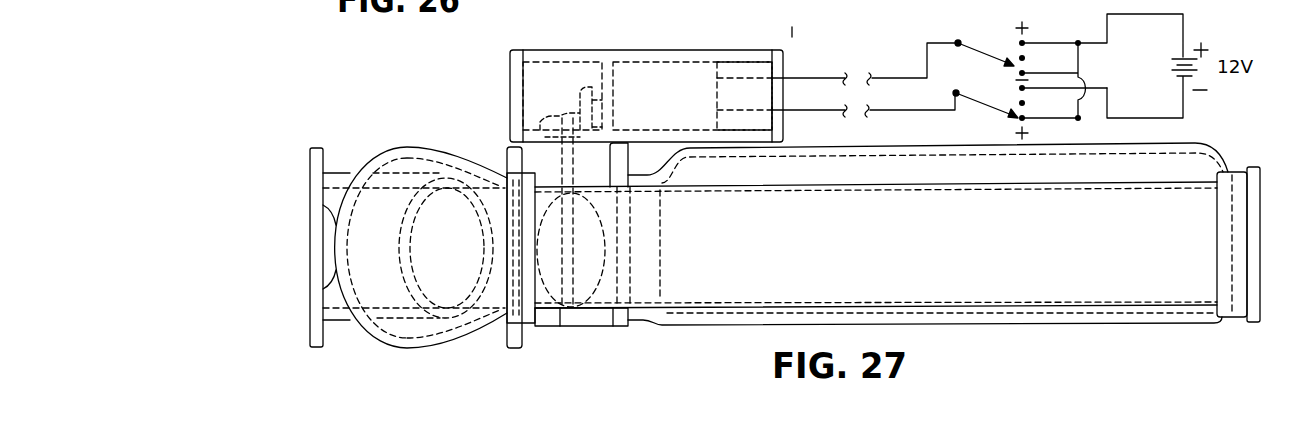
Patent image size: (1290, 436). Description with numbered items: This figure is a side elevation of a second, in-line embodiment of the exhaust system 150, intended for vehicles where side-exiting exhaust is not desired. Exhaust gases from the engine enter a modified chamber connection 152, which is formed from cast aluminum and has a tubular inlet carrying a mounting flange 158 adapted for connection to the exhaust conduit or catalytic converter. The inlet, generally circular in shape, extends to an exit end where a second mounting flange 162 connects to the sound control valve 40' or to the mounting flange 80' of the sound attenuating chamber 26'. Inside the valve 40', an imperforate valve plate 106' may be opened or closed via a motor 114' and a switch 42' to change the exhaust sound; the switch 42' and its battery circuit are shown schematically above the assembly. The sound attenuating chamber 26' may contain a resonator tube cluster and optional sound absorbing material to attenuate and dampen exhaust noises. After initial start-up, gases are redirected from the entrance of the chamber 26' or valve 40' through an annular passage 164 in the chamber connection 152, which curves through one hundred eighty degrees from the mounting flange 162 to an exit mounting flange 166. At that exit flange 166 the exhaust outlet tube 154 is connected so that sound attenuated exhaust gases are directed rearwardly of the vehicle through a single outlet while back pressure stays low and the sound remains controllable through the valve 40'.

The sound attenuating chamber 26' is at (944, 214).
The sound control valve 40' is at (646, 80).
The switch 42' is at (988, 69).
The mounting flange 80' is at (592, 255).
The imperforate valve plate 106' is at (598, 235).
The motor 114' is at (692, 74).
The exhaust system 150 is at (403, 96).
The chamber connection 152 is at (431, 147).
The exhaust outlet tube 154 is at (741, 304).
The mounting flange 158 is at (313, 289).
The mounting flange 162 is at (510, 333).
The annular passage 164 is at (370, 302).
The exit mounting flange 166 is at (539, 329).